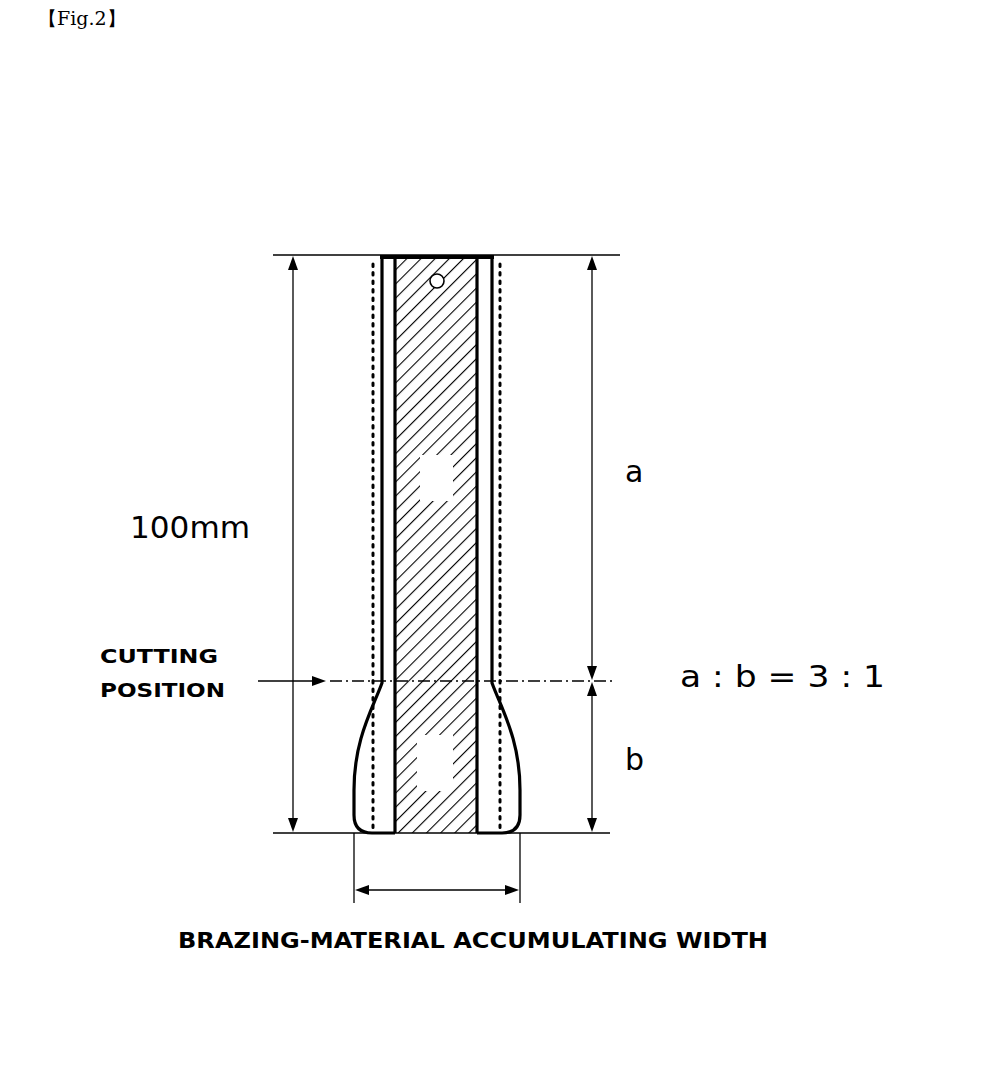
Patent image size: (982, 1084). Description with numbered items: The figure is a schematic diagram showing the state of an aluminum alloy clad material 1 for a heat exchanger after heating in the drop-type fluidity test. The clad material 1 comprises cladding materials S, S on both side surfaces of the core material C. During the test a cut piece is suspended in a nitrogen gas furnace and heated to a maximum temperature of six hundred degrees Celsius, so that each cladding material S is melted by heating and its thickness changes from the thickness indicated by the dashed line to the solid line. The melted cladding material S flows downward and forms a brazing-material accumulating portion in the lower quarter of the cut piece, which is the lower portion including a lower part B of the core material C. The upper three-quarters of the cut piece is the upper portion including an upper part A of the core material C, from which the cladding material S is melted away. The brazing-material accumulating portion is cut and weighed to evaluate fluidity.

The aluminum alloy clad material 1 is at (503, 446).
The cladding material S is at (388, 253).
The core material C is at (435, 253).
The upper part of the core material A is at (436, 479).
The lower part of the core material B is at (435, 765).